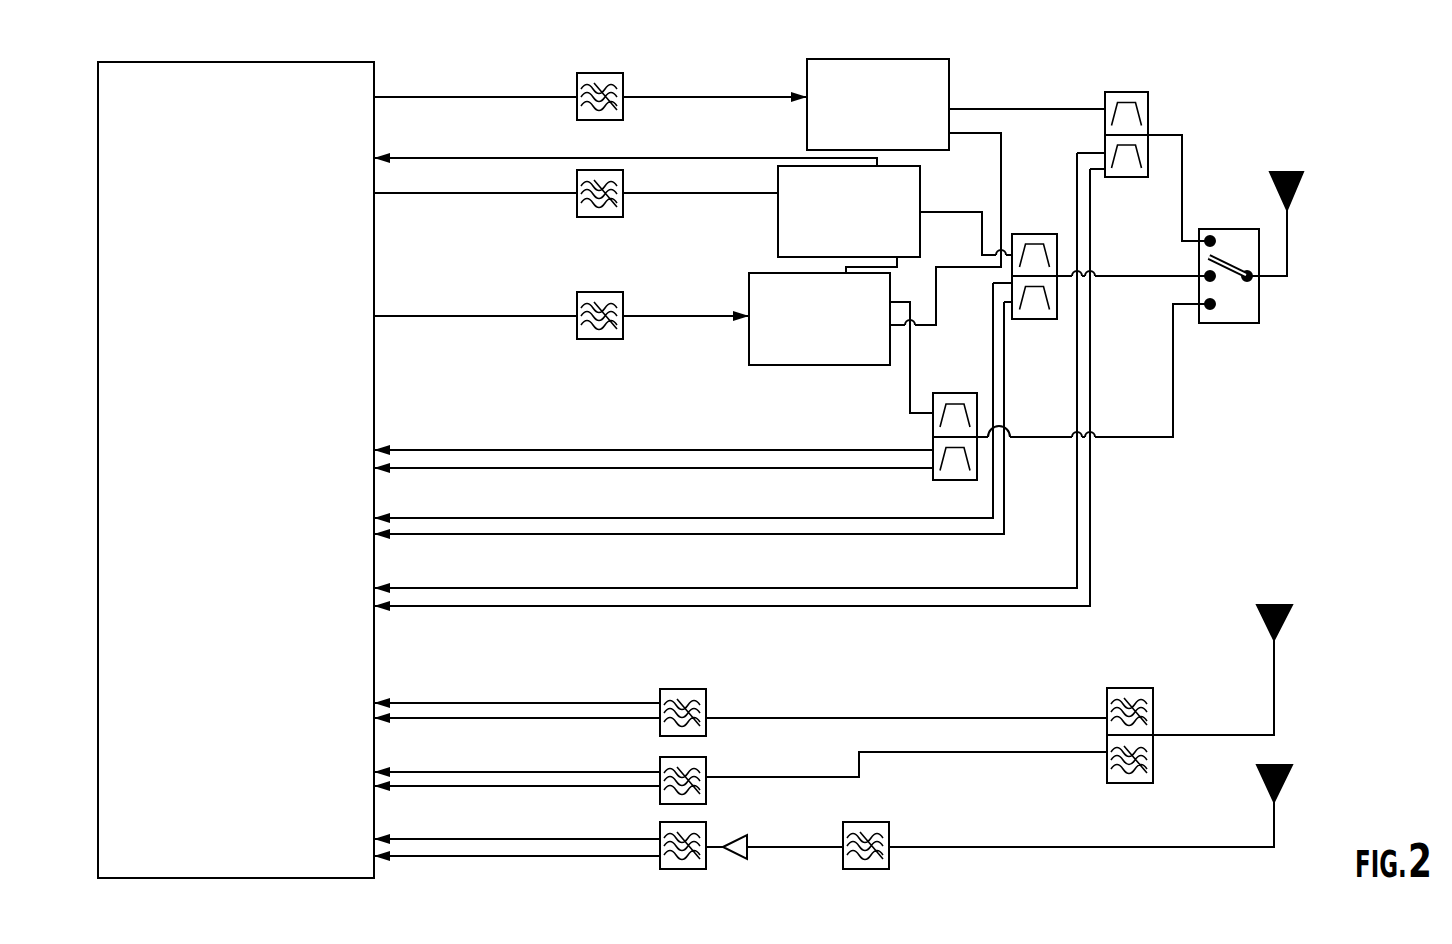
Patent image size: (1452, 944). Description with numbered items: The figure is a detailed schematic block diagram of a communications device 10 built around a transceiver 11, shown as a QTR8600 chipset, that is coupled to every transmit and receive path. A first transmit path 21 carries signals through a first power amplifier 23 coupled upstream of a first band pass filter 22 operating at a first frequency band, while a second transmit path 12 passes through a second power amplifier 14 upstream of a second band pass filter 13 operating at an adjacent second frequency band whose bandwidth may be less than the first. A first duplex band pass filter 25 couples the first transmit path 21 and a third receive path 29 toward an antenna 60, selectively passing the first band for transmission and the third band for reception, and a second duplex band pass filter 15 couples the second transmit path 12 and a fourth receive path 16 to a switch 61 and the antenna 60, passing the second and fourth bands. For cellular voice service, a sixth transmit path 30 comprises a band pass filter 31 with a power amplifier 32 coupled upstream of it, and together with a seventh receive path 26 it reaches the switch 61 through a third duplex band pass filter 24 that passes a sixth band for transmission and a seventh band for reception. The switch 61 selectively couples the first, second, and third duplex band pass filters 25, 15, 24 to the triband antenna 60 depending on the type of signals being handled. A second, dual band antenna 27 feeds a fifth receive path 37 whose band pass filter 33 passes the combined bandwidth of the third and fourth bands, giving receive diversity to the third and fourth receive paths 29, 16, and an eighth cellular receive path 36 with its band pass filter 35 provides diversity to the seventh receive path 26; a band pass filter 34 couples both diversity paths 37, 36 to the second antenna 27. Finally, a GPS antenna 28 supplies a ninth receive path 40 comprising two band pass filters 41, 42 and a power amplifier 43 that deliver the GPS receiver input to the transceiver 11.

The communications device 10 is at (1094, 242).
The transceiver 11 is at (203, 62).
The second transmit path 12 is at (717, 73).
The second band pass filter 13 is at (600, 73).
The second power amplifier 14 is at (903, 58).
The second duplex band pass filter 15 is at (1133, 92).
The fourth receive path 16 is at (1157, 522).
The first transmit path 21 is at (698, 366).
The first band pass filter 22 is at (600, 292).
The first power amplifier 23 is at (770, 394).
The third duplex band pass filter 24 is at (1032, 234).
The first duplex band pass filter 25 is at (932, 440).
The seventh receive path 26 is at (915, 561).
The second antenna 27 is at (1305, 667).
The global positioning system (GPS) antenna 28 is at (1315, 818).
The third receive path 29 is at (547, 396).
The sixth transmit path 30 is at (507, 206).
The band pass filter 31 is at (600, 217).
The power amplifier 32 is at (777, 208).
The band pass filter 33 is at (765, 742).
The band pass filter 34 is at (1150, 653).
The band pass filter 35 is at (682, 689).
The eighth cellular receive path 36 is at (604, 672).
The fifth receive path 37 is at (1027, 759).
The ninth receive path 40 is at (973, 856).
The band pass filter 41 is at (873, 822).
The band pass filter 42 is at (677, 868).
The power amplifier 43 is at (790, 812).
The antenna 60 is at (1318, 247).
The switch 61 is at (1283, 336).